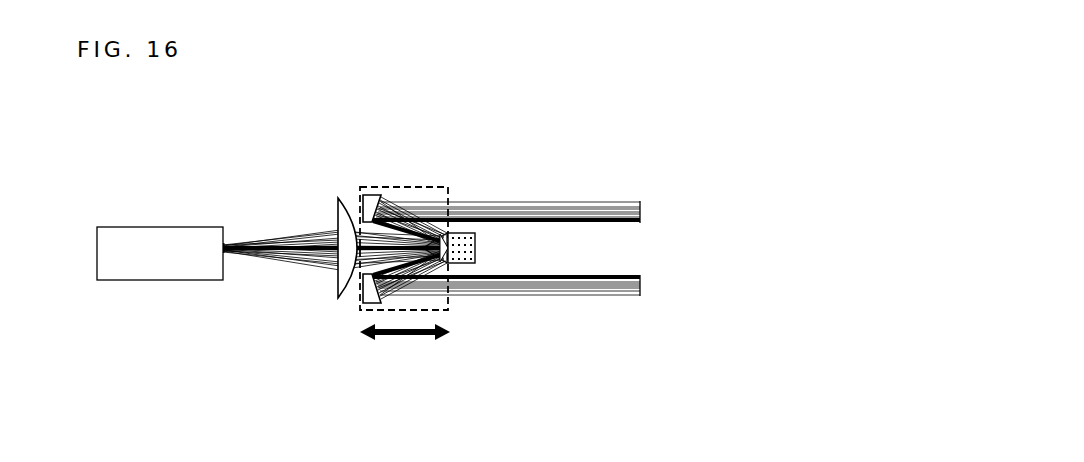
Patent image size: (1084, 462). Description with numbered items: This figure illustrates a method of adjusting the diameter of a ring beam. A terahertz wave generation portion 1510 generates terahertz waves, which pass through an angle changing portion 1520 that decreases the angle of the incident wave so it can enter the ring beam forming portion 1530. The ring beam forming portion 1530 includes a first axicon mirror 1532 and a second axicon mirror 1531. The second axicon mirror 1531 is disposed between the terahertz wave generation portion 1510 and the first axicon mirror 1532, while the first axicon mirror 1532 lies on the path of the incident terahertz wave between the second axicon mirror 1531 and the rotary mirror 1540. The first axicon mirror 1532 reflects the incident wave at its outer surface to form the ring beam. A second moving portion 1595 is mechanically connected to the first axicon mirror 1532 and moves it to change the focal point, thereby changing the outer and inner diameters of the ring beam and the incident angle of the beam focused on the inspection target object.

The terahertz wave generation portion 1510 is at (160, 280).
The angle changing portion 1520 is at (335, 213).
The ring beam forming portion 1530 is at (437, 187).
The second axicon mirror 1531 is at (370, 193).
The first axicon mirror 1532 is at (448, 263).
The rotary mirror 1540 is at (405, 342).
The second moving portion 1595 is at (478, 248).